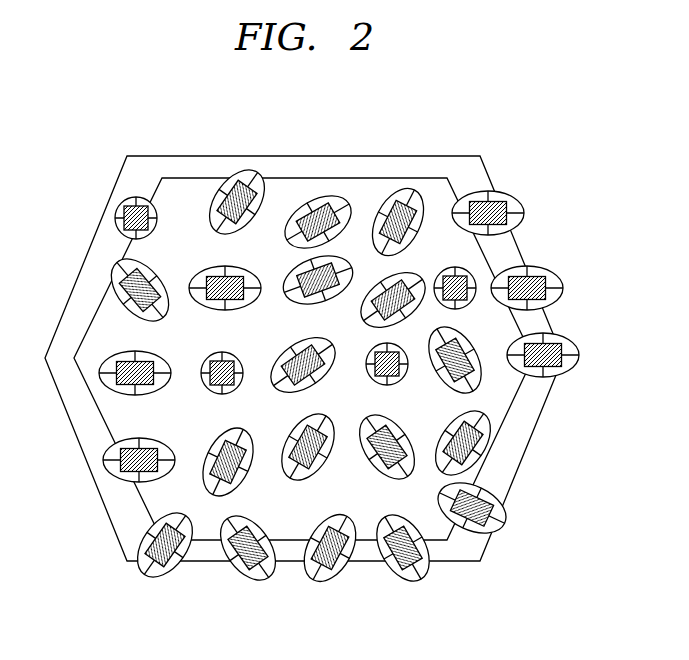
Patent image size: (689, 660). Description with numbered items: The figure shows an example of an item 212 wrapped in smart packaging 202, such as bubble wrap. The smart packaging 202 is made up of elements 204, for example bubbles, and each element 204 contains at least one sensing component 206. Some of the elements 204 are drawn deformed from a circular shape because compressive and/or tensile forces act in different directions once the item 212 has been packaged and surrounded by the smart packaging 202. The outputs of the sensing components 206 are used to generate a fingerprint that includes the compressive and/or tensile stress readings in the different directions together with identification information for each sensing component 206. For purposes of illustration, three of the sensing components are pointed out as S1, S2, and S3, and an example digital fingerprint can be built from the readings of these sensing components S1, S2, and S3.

The smart packaging 202 is at (413, 157).
The item 212 is at (130, 415).
The elements 204 is at (116, 219).
The sensing component 206 is at (497, 212).
The sensing component S1 is at (226, 192).
The sensing component S2 is at (120, 290).
The sensing component S3 is at (503, 517).